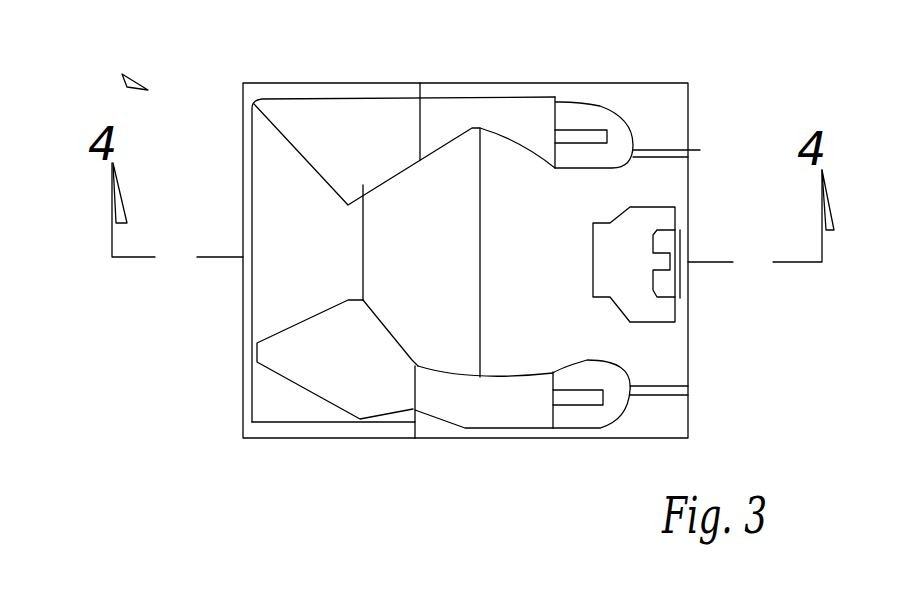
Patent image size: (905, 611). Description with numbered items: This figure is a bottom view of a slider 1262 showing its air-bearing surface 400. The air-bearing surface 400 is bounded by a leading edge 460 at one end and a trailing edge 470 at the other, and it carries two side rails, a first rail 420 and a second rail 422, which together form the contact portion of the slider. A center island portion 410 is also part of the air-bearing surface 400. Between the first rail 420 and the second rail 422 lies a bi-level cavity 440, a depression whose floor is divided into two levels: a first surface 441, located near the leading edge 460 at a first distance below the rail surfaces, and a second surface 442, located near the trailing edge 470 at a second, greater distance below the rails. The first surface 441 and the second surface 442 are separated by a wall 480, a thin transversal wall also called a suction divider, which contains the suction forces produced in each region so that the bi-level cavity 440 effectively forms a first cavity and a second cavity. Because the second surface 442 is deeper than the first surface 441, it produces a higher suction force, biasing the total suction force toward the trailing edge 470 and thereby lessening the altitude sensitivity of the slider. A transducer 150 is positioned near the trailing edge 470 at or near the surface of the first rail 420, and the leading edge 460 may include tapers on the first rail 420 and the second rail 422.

The viewing direction arrow 1262 is at (125, 85).
The air-bearing surface 400 is at (410, 208).
The leading edge 460 is at (245, 283).
The first surface 441 is at (393, 270).
The wall 480 is at (483, 160).
The bi-level cavity 440 is at (403, 317).
The first rail 420 is at (520, 110).
The second rail 422 is at (498, 417).
The second surface 442 is at (548, 200).
The center island portion 410 is at (640, 220).
The transducer 150 is at (688, 264).
The trailing edge 470 is at (688, 343).